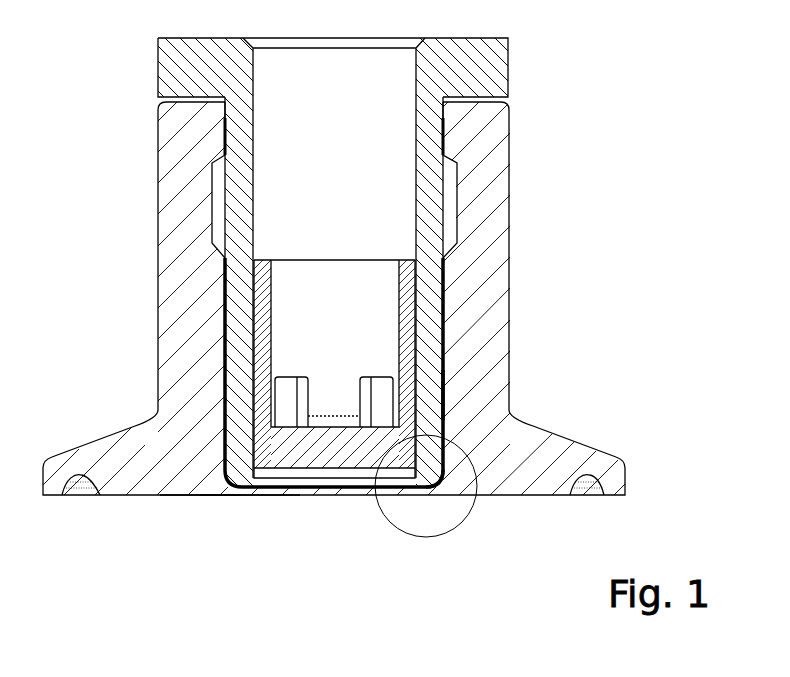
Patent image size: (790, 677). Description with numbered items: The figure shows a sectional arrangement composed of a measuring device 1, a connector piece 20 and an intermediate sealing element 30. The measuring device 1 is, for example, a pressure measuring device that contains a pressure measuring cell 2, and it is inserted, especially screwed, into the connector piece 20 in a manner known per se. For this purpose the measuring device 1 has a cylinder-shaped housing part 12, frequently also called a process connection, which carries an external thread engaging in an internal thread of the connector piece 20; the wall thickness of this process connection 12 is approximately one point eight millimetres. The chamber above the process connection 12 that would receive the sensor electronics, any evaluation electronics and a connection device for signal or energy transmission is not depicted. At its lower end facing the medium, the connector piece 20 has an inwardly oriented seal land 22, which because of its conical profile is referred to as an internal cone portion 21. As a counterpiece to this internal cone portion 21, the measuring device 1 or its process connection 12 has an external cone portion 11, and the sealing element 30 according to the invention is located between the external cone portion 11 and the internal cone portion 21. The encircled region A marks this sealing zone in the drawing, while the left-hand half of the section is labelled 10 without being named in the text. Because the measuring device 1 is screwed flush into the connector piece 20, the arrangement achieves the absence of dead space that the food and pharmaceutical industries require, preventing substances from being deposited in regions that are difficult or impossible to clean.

The measuring device 1 is at (348, 340).
The pressure measuring cell 2 is at (329, 457).
The first housing part 10 is at (250, 405).
The external cone portion 11 is at (227, 497).
The housing part 12 is at (446, 394).
The connector piece 20 is at (490, 348).
The internal cone portion 21 is at (200, 496).
The seal land 22 is at (446, 492).
The sealing element 30 is at (440, 473).
The detail region A is at (455, 522).